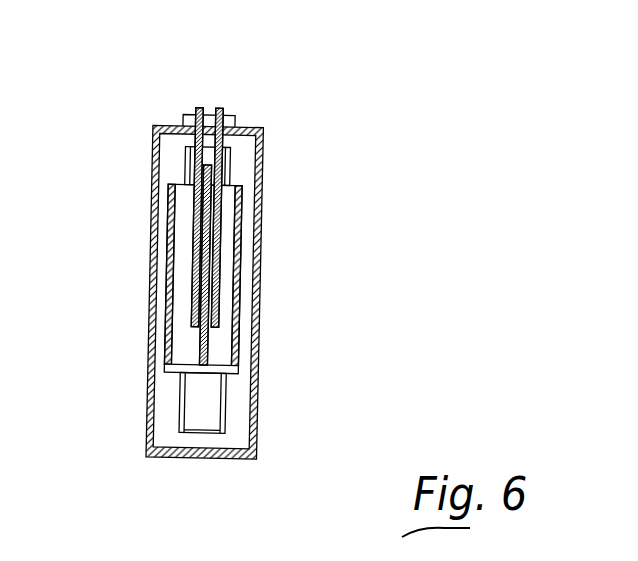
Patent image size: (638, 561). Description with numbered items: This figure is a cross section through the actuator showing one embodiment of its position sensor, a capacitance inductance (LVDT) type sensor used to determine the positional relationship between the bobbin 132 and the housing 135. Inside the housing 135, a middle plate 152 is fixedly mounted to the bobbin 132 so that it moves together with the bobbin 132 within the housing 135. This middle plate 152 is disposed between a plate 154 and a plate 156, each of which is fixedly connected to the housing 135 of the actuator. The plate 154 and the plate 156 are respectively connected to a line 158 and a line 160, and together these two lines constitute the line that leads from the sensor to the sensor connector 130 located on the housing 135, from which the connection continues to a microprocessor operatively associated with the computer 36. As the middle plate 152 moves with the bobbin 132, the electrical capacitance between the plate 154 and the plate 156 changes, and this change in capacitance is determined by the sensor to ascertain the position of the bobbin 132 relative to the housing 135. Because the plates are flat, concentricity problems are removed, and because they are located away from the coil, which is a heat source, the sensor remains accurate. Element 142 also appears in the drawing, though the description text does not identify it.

The computer 36 is at (207, 407).
The sensor connector 130 is at (187, 115).
The bobbin 132 is at (223, 290).
The housing 135 is at (261, 143).
The insulating sleeve 142 is at (238, 255).
The middle plate 152 is at (197, 361).
The plate 154 is at (220, 207).
The plate 156 is at (183, 162).
The line 158 is at (198, 107).
The line 160 is at (222, 106).